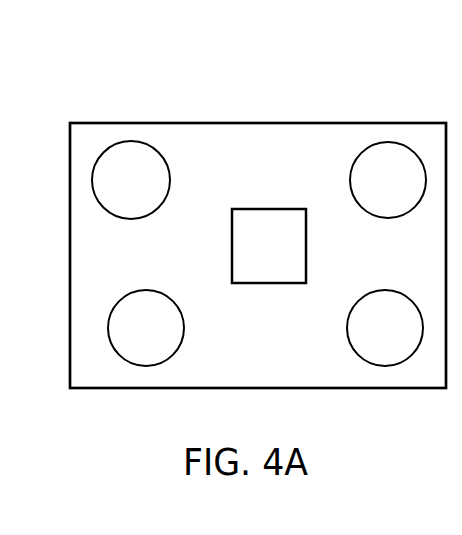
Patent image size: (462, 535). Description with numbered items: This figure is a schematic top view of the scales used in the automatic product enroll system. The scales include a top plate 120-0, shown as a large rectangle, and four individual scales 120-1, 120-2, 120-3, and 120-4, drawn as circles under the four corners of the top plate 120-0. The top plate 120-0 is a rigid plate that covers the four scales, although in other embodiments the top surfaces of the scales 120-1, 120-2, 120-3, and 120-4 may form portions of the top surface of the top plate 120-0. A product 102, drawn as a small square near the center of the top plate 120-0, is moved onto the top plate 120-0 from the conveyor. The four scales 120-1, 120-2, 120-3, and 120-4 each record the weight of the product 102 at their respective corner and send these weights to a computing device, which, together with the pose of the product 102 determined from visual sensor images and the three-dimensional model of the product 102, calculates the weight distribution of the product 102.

The top plate 120-0 is at (252, 153).
The first scale 120-1 is at (157, 192).
The second scale 120-2 is at (414, 192).
The third scale 120-3 is at (411, 340).
The fourth scale 120-4 is at (172, 340).
The product 102 is at (290, 258).